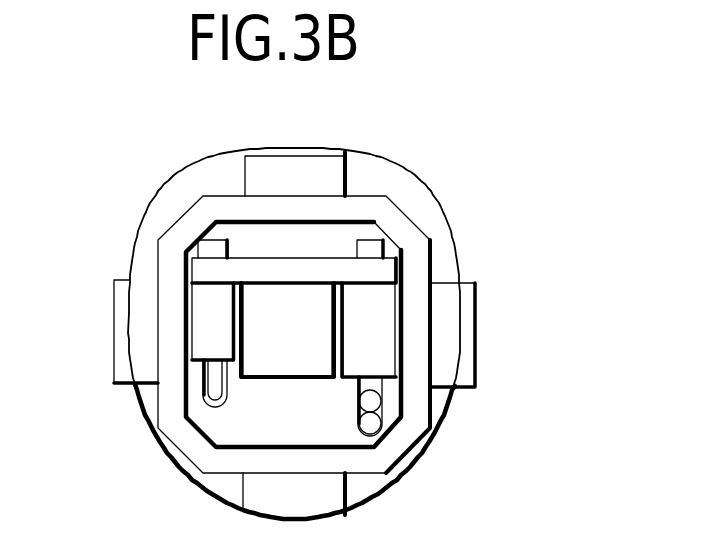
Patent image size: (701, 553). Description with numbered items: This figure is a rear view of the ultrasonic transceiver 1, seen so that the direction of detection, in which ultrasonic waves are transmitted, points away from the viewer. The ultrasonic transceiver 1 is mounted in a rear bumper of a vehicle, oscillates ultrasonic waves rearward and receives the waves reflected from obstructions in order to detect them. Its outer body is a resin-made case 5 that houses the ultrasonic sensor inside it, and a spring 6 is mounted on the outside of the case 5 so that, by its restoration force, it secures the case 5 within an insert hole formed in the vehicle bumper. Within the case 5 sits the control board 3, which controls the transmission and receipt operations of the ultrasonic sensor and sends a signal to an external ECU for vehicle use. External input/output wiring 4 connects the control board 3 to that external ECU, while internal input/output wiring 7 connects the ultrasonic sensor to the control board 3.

The ultrasonic transceiver 1 is at (99, 217).
The control board 3 is at (327, 272).
The external input/output wiring 4 is at (383, 418).
The resin-made case 5 is at (440, 234).
The spring 6 is at (458, 335).
The internal input/output wiring 7 is at (203, 386).